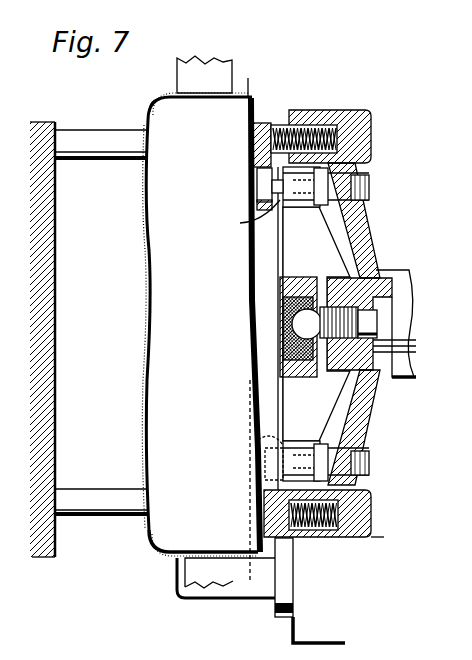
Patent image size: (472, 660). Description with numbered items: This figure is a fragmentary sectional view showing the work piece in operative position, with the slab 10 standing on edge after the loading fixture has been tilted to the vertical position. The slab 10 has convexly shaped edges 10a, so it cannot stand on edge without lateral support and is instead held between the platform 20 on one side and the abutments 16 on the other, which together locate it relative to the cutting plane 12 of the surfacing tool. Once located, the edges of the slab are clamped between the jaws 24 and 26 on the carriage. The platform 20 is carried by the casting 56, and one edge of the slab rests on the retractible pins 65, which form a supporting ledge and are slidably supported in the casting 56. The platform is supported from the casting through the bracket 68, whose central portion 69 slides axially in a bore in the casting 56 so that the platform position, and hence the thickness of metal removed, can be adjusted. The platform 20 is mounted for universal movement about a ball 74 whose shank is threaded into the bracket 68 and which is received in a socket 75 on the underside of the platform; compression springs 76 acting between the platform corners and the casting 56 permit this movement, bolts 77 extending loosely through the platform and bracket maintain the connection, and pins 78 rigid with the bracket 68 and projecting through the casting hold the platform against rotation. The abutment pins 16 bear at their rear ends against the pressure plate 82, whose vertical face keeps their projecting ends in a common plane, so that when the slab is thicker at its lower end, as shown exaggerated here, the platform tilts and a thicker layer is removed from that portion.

The slab 10 is at (163, 417).
The convexly shaped edges 10a is at (146, 556).
The cutting plane 12 is at (265, 479).
The abutments 16 is at (128, 156).
The platform 20 is at (270, 255).
The jaw 24 is at (186, 78).
The jaw 26 is at (186, 571).
The casting 56 is at (296, 622).
The retractible pins 65 is at (200, 598).
The bracket 68 is at (325, 245).
The central portion 69 is at (378, 290).
The ball 74 is at (300, 315).
The socket 75 is at (292, 340).
The compression springs 76 is at (320, 132).
The bolts 77 is at (250, 224).
The pins 78 is at (355, 182).
The pressure plate 82 is at (50, 368).